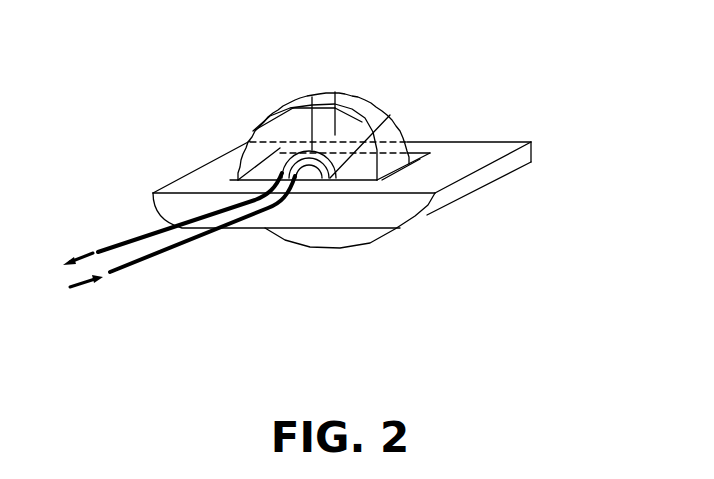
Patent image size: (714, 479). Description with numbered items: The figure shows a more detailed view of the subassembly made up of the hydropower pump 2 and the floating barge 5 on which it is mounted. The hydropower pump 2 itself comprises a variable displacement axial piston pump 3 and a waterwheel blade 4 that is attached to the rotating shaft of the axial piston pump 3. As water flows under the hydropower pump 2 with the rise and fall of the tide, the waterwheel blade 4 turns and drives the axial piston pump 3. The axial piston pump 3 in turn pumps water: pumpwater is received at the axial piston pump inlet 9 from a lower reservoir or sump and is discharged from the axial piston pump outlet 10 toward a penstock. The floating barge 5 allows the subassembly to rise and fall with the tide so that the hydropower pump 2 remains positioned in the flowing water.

The hydropower pump 2 is at (238, 86).
The variable displacement axial piston pump 3 is at (283, 170).
The waterwheel blade 4 is at (368, 104).
The floating barge 5 is at (482, 179).
The axial piston pump inlet 9 is at (177, 242).
The axial piston pump outlet 10 is at (148, 232).